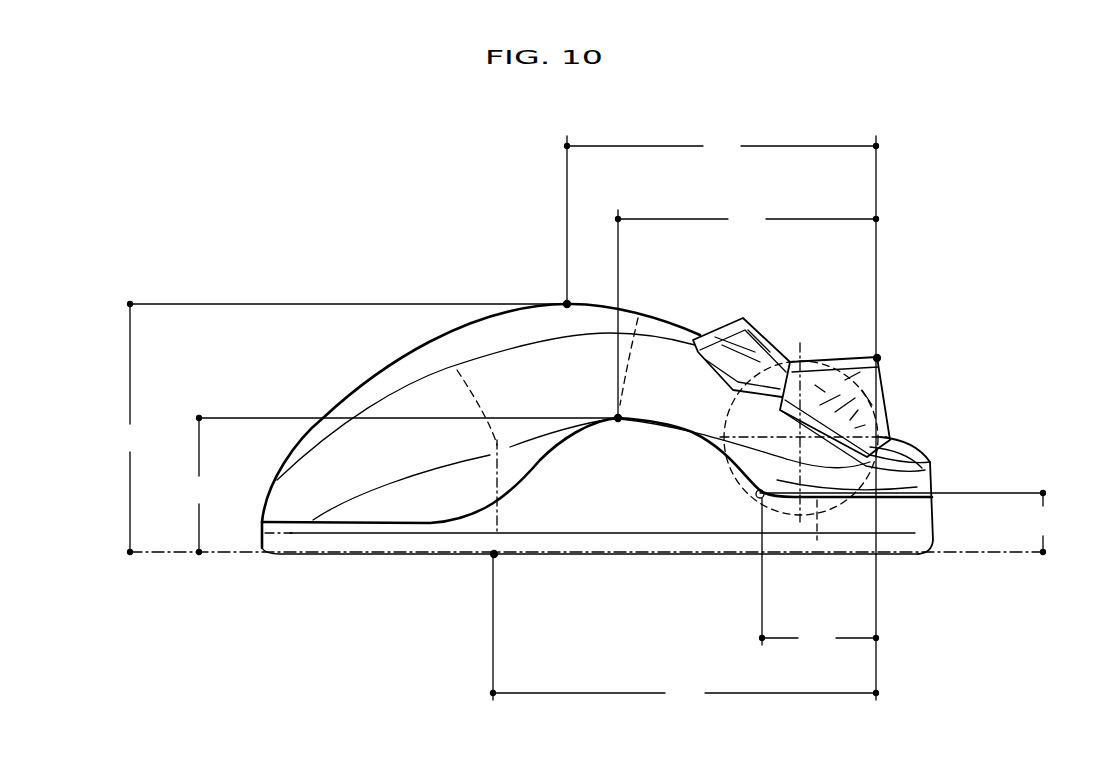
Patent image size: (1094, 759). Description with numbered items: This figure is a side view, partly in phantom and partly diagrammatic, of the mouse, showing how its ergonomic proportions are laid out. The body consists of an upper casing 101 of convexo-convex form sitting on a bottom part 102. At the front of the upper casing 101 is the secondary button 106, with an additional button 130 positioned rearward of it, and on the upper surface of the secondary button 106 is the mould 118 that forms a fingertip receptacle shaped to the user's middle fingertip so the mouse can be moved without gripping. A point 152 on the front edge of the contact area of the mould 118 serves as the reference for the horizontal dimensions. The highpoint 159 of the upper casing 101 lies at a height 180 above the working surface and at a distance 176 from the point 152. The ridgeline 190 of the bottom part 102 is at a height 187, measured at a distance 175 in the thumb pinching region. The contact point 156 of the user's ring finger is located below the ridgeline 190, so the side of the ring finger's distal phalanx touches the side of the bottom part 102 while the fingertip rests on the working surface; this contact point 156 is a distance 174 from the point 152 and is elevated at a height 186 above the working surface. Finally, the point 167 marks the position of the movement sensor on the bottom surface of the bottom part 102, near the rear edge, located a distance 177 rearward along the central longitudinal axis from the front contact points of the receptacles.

The upper casing 101 is at (375, 477).
The bottom part 102 is at (540, 508).
The secondary button 106 is at (890, 440).
The mould 118 is at (888, 403).
The additional button 130 is at (745, 318).
The point 152 is at (878, 356).
The contact point 156 is at (757, 500).
The highpoint 159 is at (567, 302).
The point 167 is at (492, 560).
The distance 174 is at (800, 649).
The distance 175 is at (730, 230).
The distance 176 is at (705, 157).
The distance 177 is at (668, 704).
The height 180 is at (113, 448).
The height 186 is at (1023, 531).
The height 187 is at (182, 501).
The ridgeline 190 is at (563, 438).